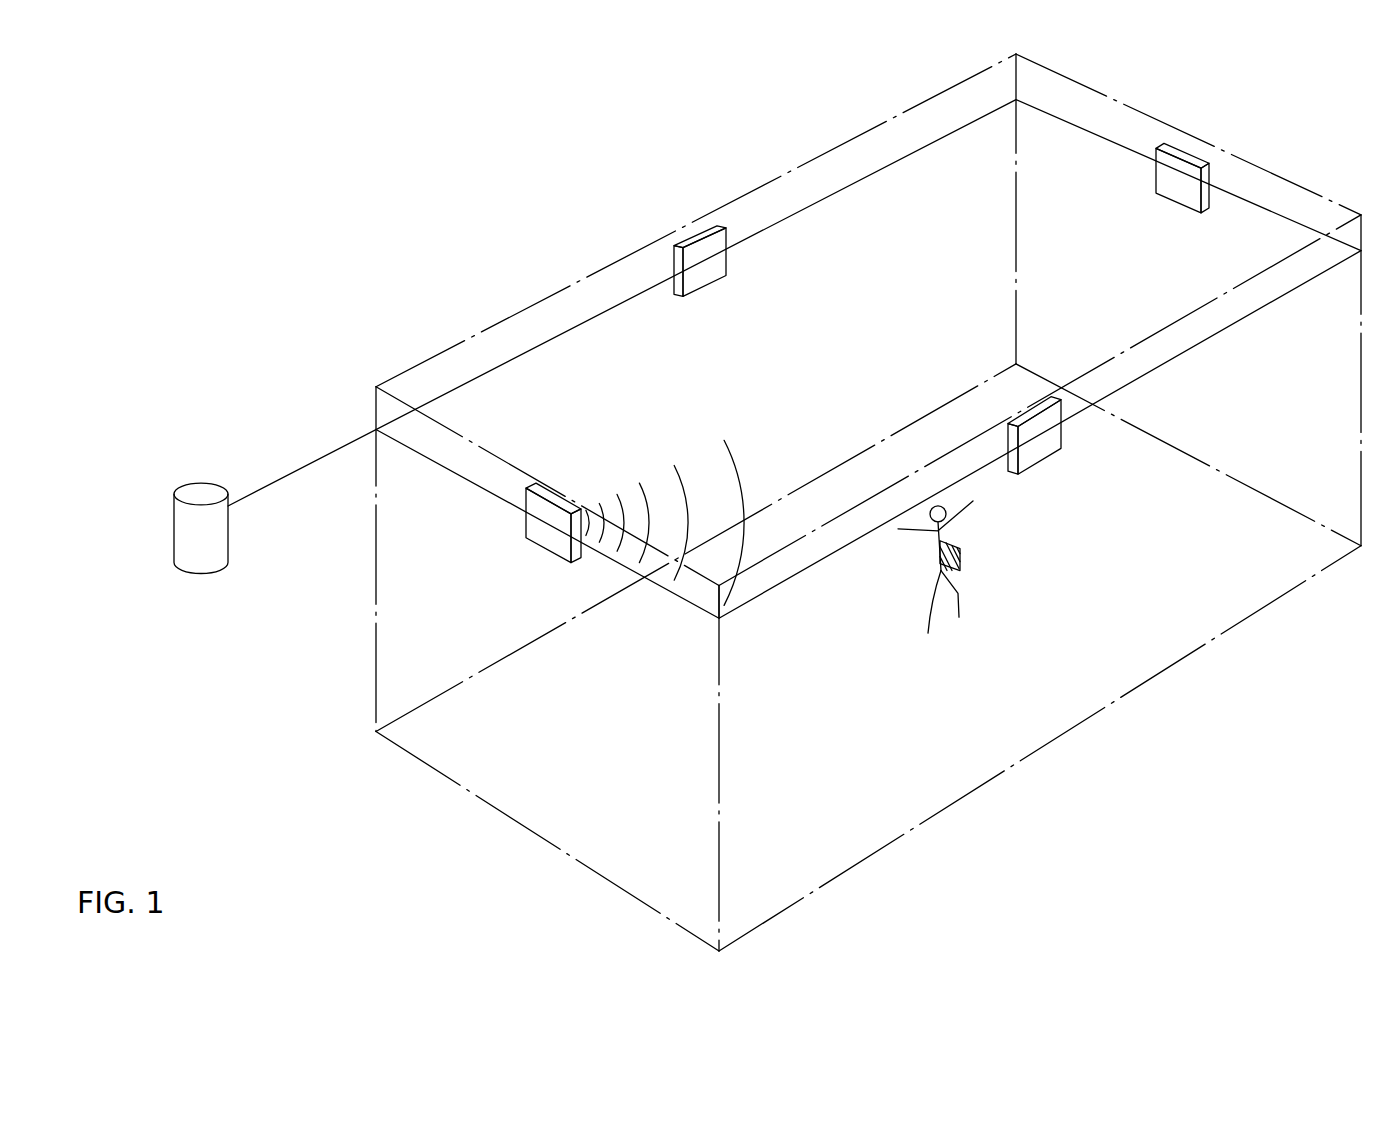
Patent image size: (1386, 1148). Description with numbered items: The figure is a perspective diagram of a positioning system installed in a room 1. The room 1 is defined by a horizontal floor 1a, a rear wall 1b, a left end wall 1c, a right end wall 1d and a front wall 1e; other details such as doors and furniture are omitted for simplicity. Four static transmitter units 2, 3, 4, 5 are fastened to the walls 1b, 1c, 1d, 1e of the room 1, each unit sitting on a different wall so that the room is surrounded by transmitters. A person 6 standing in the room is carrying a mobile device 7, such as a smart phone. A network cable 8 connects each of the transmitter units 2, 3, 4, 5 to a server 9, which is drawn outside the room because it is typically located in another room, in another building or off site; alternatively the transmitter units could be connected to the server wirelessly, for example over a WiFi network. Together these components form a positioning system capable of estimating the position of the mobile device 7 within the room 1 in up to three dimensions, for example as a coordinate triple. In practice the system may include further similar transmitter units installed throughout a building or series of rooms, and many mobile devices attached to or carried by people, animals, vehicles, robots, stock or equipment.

The room 1 is at (510, 768).
The horizontal floor 1a is at (995, 706).
The rear wall 1b is at (965, 188).
The left end wall 1c is at (678, 668).
The right end wall 1d is at (1067, 171).
The front wall 1e is at (778, 680).
The static transmitter unit 2 is at (703, 247).
The static transmitter unit 3 is at (547, 524).
The static transmitter unit 4 is at (1177, 175).
The static transmitter unit 5 is at (1038, 440).
The person 6 is at (930, 528).
The mobile device 7 is at (960, 553).
The network cable 8 is at (558, 331).
The server 9 is at (198, 493).